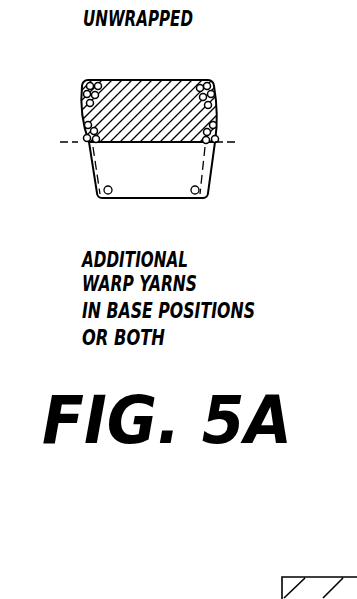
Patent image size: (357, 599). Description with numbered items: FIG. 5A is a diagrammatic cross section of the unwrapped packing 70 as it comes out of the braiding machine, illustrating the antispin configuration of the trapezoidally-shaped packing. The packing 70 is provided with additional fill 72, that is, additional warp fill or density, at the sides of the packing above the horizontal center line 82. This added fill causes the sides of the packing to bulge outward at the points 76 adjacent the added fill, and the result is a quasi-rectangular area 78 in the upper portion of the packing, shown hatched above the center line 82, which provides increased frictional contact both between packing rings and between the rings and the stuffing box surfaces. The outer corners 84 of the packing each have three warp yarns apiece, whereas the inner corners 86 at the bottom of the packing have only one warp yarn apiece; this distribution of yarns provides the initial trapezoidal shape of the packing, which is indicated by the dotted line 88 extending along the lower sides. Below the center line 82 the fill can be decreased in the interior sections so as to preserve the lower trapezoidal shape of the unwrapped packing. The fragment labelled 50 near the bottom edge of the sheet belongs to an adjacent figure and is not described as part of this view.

The packing 70 is at (216, 82).
The additional fill 72 is at (83, 124).
The points 76 is at (85, 124).
The quasi-rectangular area 78 is at (130, 80).
The center line 82 is at (163, 146).
The outer corners 84 is at (86, 88).
The inner corners 86 is at (107, 198).
The dotted line 88 is at (85, 159).
The fabric section 50 is at (340, 577).